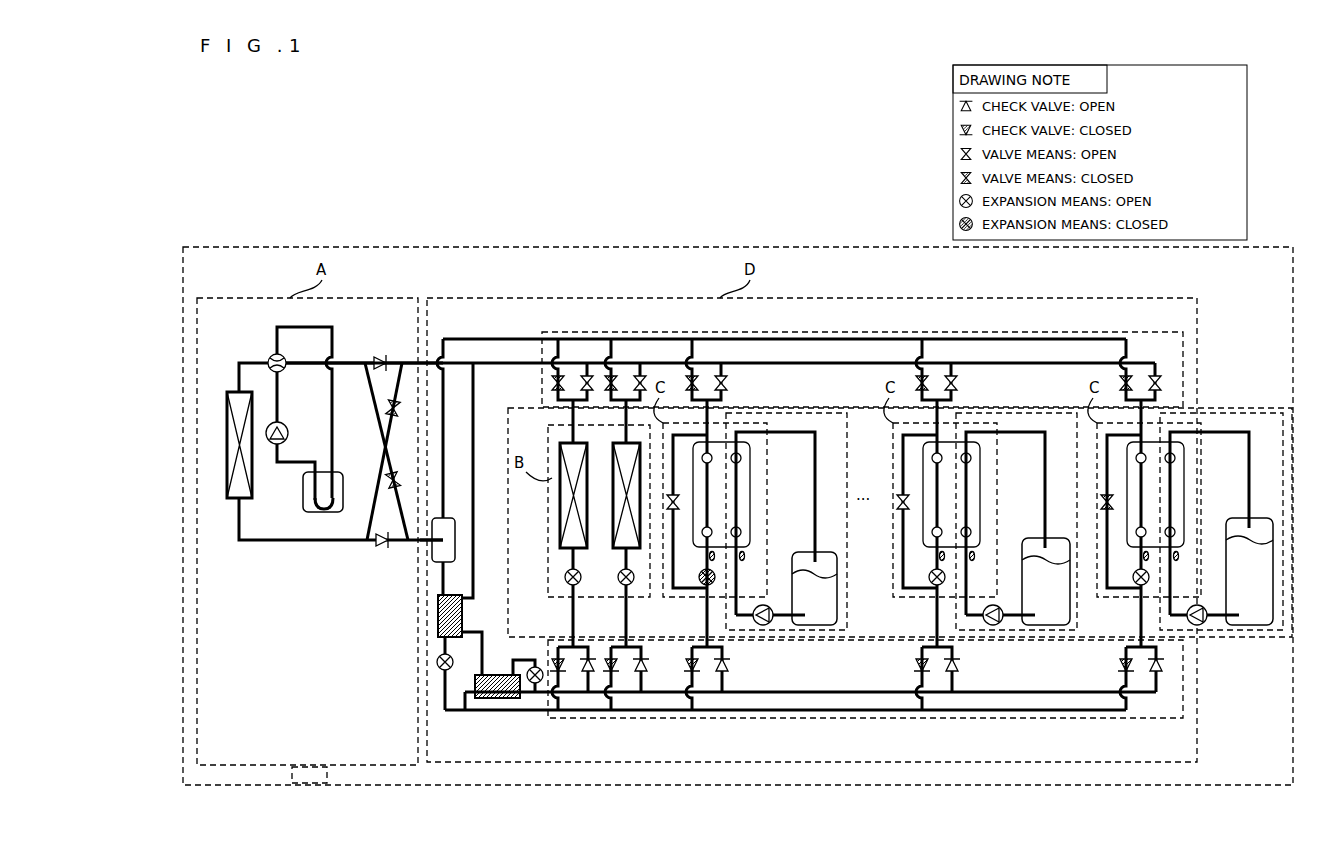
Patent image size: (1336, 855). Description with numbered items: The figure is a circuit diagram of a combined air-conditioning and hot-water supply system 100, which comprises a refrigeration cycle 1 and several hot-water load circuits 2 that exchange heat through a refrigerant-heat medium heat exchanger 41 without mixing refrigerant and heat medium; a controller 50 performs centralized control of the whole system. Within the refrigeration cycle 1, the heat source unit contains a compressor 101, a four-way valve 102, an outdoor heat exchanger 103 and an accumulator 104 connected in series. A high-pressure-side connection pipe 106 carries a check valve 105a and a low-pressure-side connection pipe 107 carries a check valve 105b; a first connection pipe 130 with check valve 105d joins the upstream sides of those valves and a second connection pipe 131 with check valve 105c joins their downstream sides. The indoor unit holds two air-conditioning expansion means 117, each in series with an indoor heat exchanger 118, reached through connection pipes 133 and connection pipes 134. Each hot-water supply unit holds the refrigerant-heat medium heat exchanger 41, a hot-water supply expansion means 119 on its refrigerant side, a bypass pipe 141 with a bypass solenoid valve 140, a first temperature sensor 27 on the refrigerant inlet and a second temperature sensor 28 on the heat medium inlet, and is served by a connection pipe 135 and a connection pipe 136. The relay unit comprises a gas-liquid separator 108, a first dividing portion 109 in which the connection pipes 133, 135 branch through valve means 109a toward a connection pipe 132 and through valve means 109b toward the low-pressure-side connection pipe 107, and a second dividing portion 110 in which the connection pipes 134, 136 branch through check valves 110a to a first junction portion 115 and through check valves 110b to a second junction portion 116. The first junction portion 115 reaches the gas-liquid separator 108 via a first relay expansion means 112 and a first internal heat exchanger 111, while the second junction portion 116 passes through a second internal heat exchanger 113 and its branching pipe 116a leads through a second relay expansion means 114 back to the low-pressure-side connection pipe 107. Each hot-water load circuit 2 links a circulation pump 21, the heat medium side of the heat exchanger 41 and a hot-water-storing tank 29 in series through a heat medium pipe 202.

The refrigeration cycle 1 is at (372, 247).
The combined air-conditioning and hot-water supply system 100 is at (862, 221).
The hot-water load circuit 2 is at (802, 413).
The circulation pump 21 is at (773, 611).
The first temperature sensor 27 is at (715, 561).
The second temperature sensor 28 is at (746, 556).
The hot-water-storing tank 29 is at (828, 552).
The refrigerant-heat medium heat exchanger 41 is at (739, 490).
The controller 50 is at (316, 783).
The compressor 101 is at (288, 425).
The four-way valve 102 is at (270, 356).
The outdoor heat exchanger 103 is at (229, 392).
The accumulator 104 is at (343, 482).
The check valve 105a is at (382, 548).
The check valve 105b is at (380, 356).
The check valve 105c is at (405, 540).
The check valve 105d is at (402, 367).
The high-pressure-side connection pipe 106 is at (420, 568).
The low-pressure-side connection pipe 107 is at (424, 336).
The gas-liquid separator 108 is at (452, 520).
The first dividing portion 109 is at (1010, 332).
The valve means 109a is at (560, 372).
The valve means 109b is at (587, 372).
The second dividing portion 110 is at (820, 718).
The check valve 110a is at (559, 700).
The check valve 110b is at (589, 700).
The first internal heat exchanger 111 is at (464, 613).
The first relay expansion means 112 is at (452, 668).
The second internal heat exchanger 113 is at (492, 675).
The second relay expansion means 114 is at (537, 668).
The first junction portion 115 is at (497, 718).
The second junction portion 116 is at (540, 705).
The branching pipe 116a is at (474, 415).
The air-conditioning expansion means 117 is at (565, 577).
The indoor heat exchanger 118 is at (560, 505).
The hot-water supply expansion means 119 is at (699, 577).
The first connection pipe 130 is at (365, 537).
The second connection pipe 131 is at (374, 401).
The connection pipe 132 is at (482, 337).
The connection pipe 133 is at (567, 417).
The connection pipe 134 is at (570, 622).
The connection pipe 135 is at (709, 420).
The connection pipe 136 is at (705, 616).
The bypass solenoid valve 140 is at (671, 510).
The bypass pipe 141 is at (671, 495).
The heat medium pipe 202 is at (787, 434).